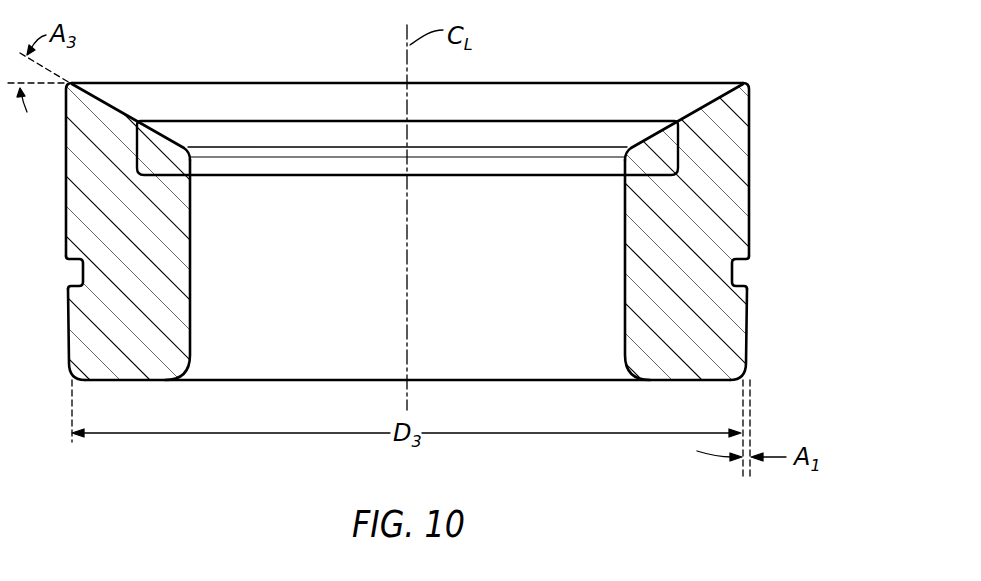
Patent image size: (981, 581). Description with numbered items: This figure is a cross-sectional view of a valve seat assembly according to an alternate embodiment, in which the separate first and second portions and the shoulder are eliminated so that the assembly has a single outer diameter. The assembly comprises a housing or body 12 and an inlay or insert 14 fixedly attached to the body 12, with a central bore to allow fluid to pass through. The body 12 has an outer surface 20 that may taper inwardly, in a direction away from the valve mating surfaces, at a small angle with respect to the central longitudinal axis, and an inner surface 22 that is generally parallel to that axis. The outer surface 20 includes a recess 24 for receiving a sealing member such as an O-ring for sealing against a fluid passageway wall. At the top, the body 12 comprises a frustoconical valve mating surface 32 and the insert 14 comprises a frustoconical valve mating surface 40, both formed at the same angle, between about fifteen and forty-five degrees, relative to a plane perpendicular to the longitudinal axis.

The body 12 is at (756, 177).
The insert 14 is at (684, 144).
The outer surface 20 is at (748, 338).
The inner surface 22 is at (625, 300).
The recess 24 is at (745, 272).
The frustoconical valve mating surface 32 is at (613, 100).
The frustoconical valve mating surface 40 is at (518, 133).